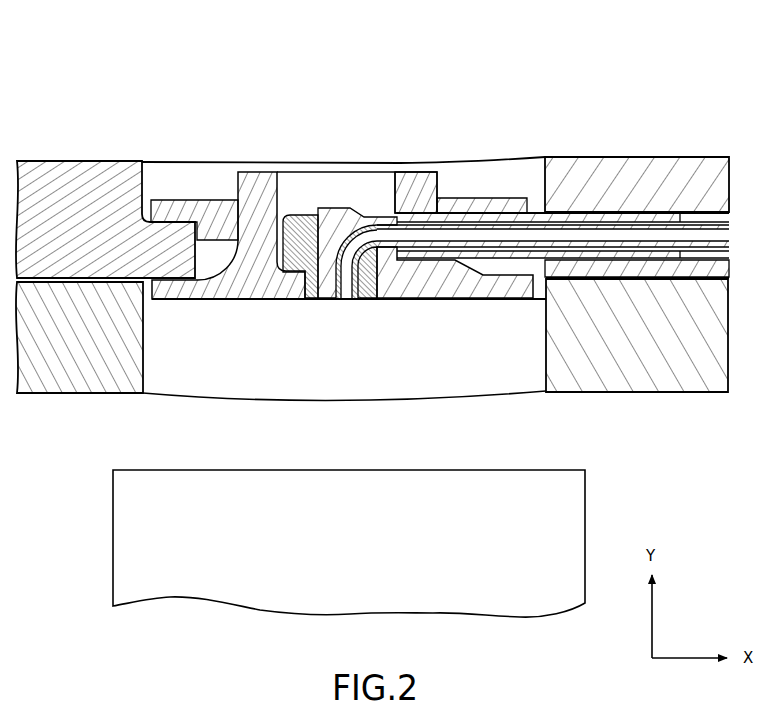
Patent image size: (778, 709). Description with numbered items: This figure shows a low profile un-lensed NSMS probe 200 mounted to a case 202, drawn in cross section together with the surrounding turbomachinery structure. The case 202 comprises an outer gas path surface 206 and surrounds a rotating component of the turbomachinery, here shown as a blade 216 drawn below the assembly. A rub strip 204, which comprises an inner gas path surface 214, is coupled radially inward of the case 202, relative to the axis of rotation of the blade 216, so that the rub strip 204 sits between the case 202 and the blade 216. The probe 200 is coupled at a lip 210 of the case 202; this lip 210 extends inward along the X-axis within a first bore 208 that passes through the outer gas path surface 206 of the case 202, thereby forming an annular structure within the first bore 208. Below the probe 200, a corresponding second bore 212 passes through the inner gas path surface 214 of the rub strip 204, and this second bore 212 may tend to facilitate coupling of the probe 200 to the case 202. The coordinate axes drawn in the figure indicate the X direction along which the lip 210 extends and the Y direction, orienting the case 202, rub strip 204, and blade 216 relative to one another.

The low profile un-lensed NSMS probe 200 is at (372, 248).
The case 202 is at (84, 239).
The rub strip 204 is at (84, 357).
The outer gas path surface 206 is at (623, 157).
The first bore 208 is at (170, 188).
The lip 210 is at (180, 268).
The second bore 212 is at (443, 388).
The inner gas path surface 214 is at (623, 392).
The blade 216 is at (344, 559).